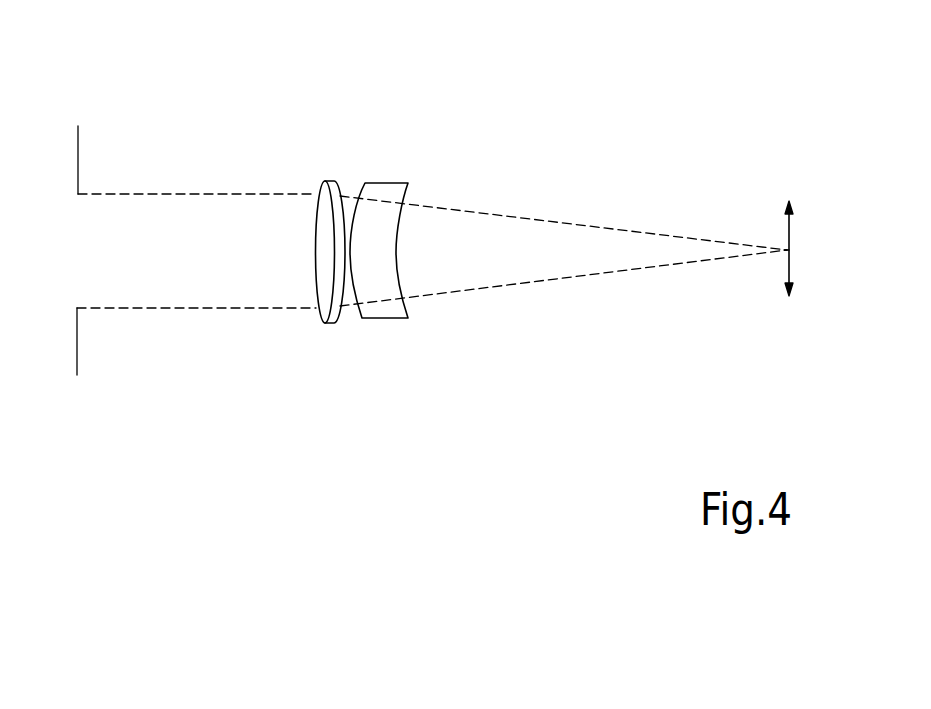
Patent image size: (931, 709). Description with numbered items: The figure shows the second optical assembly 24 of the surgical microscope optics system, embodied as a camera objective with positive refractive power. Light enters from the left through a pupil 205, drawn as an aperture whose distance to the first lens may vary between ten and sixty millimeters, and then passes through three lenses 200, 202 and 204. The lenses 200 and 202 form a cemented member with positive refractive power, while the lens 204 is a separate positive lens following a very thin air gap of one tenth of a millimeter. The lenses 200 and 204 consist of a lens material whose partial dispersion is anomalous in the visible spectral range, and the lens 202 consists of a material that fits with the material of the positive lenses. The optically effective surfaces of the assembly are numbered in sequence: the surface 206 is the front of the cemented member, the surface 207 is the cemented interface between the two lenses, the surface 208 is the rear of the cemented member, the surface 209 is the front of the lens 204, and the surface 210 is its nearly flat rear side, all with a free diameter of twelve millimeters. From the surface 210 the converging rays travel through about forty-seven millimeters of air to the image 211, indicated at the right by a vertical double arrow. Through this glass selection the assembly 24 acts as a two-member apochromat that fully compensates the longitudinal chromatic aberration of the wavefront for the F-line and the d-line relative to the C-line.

The second optical assembly 24 is at (413, 95).
The lens 200 is at (322, 182).
The lens 202 is at (337, 183).
The lens 204 is at (394, 182).
The pupil 205 is at (78, 128).
The optically effective surface 206 is at (318, 232).
The optically effective surface 207 is at (334, 281).
The optically effective surface 208 is at (345, 200).
The optically effective surface 209 is at (362, 312).
The optically effective surface 210 is at (397, 257).
The image 211 is at (788, 238).